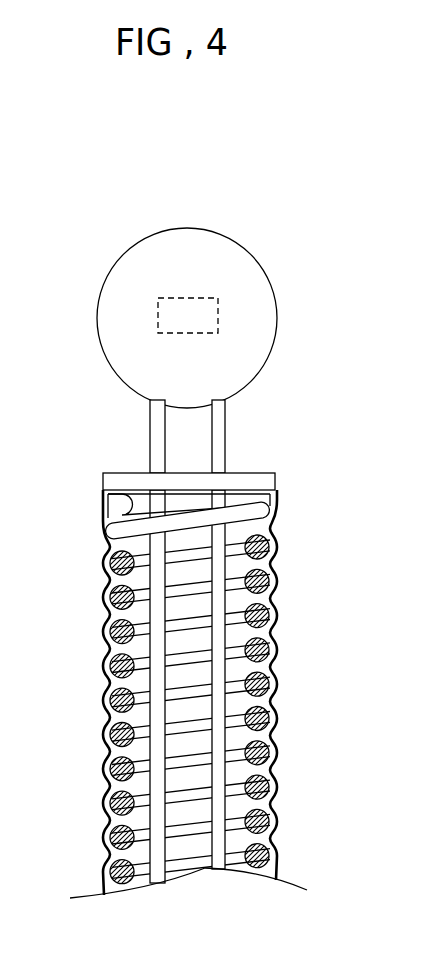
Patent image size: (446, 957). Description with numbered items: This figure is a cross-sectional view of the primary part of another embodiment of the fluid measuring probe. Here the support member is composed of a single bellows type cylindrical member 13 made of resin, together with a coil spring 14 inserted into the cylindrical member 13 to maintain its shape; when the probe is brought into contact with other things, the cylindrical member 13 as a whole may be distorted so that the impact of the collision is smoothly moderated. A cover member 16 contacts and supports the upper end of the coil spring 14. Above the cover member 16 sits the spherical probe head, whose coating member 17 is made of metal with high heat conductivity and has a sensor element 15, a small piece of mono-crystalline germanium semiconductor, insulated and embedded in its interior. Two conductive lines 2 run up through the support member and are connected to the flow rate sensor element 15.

The conductive lines 2 is at (163, 437).
The bellows type cylindrical member 13 is at (277, 592).
The coil spring 14 is at (252, 517).
The sensor element 15 is at (218, 313).
The cover member 16 is at (265, 482).
The coating member 17 is at (243, 250).